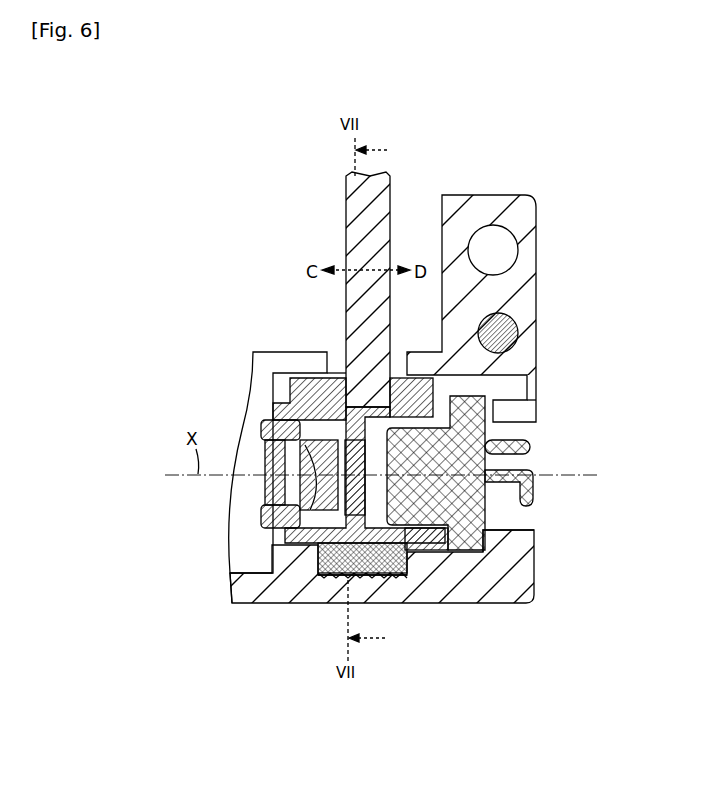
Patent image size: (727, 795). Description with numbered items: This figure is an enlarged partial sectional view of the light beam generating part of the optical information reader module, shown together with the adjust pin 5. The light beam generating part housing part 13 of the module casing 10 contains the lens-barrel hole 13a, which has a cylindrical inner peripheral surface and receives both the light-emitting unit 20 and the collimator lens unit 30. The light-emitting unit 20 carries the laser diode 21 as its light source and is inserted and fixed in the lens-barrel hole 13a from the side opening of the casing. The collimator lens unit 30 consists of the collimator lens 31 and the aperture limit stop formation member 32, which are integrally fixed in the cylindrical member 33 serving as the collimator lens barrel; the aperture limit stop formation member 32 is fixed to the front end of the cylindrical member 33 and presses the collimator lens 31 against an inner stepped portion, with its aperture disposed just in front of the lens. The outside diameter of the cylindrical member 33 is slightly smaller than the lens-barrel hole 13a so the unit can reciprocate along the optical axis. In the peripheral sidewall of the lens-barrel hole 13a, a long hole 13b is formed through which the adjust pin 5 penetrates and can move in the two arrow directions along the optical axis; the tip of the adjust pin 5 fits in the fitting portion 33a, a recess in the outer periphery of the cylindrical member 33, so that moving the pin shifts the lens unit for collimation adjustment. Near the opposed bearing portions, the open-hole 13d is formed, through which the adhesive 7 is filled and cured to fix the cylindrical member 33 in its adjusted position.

The adjust pin 5 is at (346, 214).
The adhesive 7 is at (334, 580).
The module casing 10 is at (517, 281).
The light beam generating part housing part 13 is at (498, 588).
The lens-barrel hole 13a is at (515, 550).
The long hole 13b is at (330, 352).
The open-hole 13d is at (414, 572).
The light-emitting unit 20 is at (545, 460).
The laser diode 21 is at (440, 545).
The collimator lens unit 30 is at (245, 520).
The collimator lens 31 is at (305, 395).
The aperture limit stop formation member 32 is at (264, 422).
The cylindrical member 33 is at (300, 580).
The fitting portion 33a is at (395, 380).